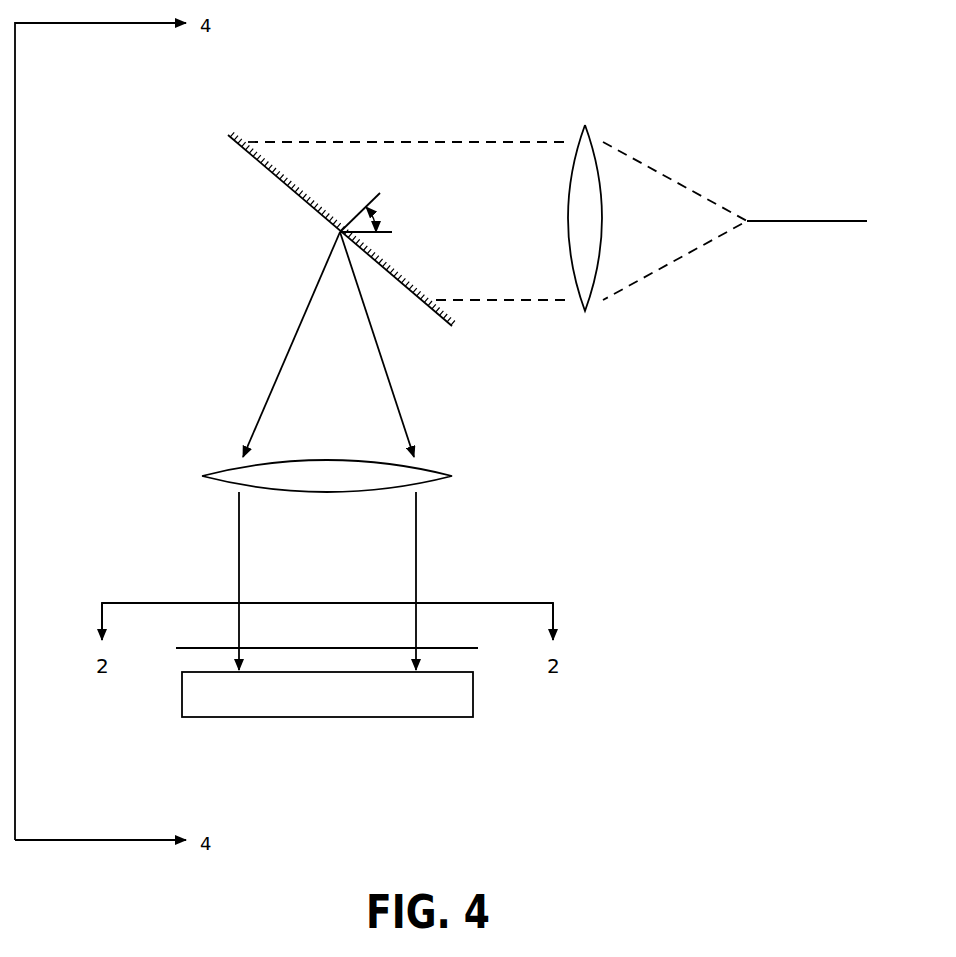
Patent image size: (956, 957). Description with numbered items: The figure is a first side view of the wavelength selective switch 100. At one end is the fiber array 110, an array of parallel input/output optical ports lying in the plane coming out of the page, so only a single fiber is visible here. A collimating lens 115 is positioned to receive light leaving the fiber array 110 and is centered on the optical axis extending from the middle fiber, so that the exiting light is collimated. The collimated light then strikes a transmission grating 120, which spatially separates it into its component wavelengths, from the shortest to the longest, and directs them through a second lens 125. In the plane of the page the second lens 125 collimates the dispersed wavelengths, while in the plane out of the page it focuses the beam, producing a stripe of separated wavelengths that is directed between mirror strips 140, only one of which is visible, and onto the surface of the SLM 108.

The wavelength selective switch 100 is at (650, 489).
The SLM 108 is at (328, 718).
The fiber array 110 is at (808, 219).
The collimating lens 115 is at (585, 125).
The transmission grating 120 is at (243, 147).
The second lens 125 is at (222, 466).
The mirror strips 140 is at (205, 648).